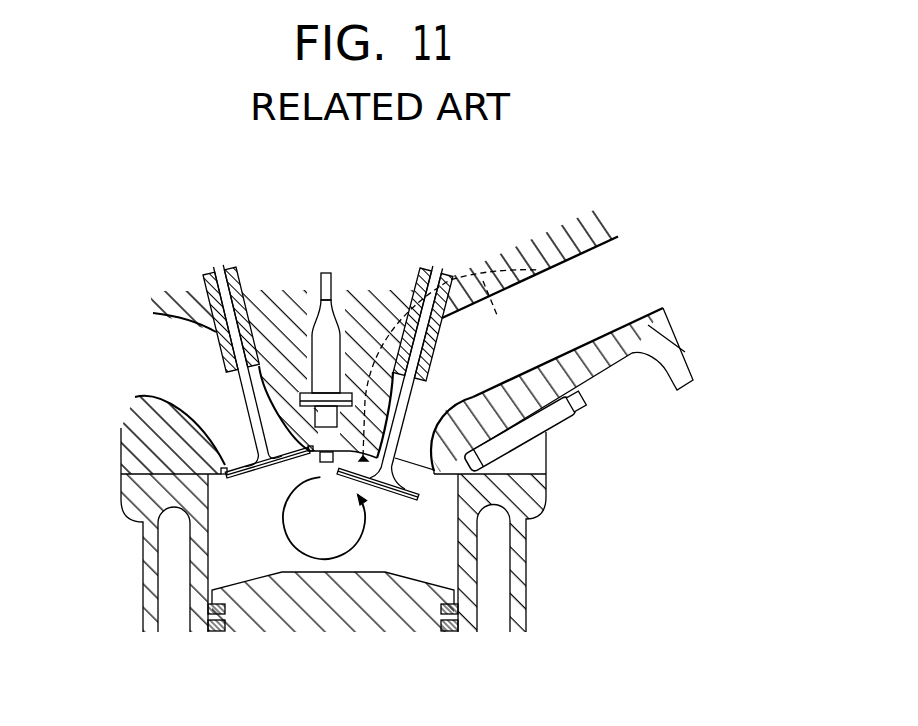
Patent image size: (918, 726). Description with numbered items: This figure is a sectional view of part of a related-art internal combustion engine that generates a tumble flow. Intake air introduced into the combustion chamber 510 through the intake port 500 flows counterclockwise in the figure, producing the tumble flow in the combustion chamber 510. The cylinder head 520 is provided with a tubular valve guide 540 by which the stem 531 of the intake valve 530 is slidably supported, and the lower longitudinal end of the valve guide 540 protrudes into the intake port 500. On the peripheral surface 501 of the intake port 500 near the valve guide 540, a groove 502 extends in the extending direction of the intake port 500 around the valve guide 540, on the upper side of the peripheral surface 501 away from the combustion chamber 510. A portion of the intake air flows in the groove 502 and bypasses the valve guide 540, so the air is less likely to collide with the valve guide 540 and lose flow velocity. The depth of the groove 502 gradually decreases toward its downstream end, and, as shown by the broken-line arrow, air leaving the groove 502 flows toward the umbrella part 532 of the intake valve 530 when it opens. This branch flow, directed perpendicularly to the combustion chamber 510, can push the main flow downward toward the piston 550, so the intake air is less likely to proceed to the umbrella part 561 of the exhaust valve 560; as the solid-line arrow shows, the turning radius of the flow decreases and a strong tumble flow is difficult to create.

The intake port 500 is at (724, 310).
The peripheral surface 501 is at (583, 250).
The groove 502 is at (449, 365).
The combustion chamber 510 is at (342, 535).
The cylinder head 520 is at (121, 444).
The intake valve 530 is at (431, 372).
The stem 531 is at (447, 346).
The umbrella part 532 is at (362, 485).
The valve guide 540 is at (410, 305).
The piston 550 is at (430, 597).
The exhaust valve 560 is at (216, 366).
The umbrella part 561 is at (243, 452).